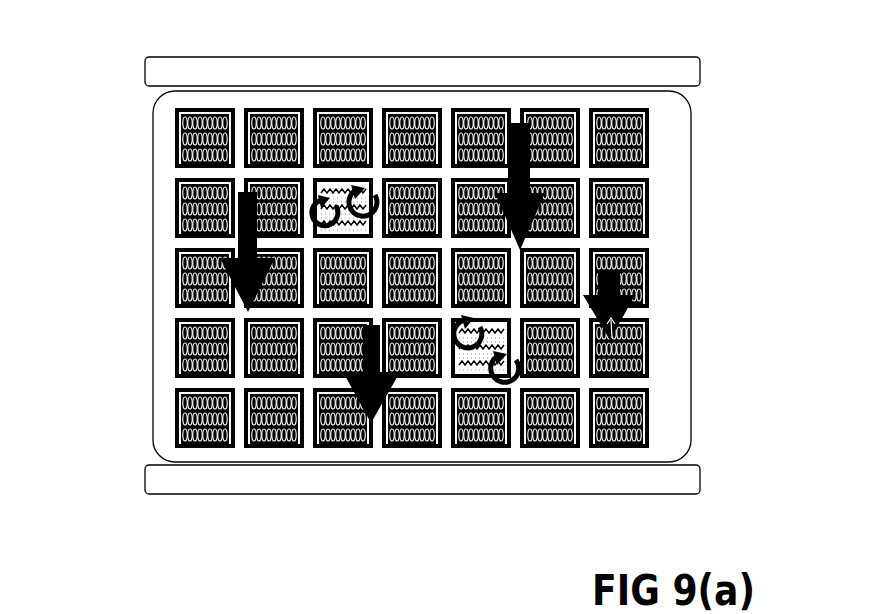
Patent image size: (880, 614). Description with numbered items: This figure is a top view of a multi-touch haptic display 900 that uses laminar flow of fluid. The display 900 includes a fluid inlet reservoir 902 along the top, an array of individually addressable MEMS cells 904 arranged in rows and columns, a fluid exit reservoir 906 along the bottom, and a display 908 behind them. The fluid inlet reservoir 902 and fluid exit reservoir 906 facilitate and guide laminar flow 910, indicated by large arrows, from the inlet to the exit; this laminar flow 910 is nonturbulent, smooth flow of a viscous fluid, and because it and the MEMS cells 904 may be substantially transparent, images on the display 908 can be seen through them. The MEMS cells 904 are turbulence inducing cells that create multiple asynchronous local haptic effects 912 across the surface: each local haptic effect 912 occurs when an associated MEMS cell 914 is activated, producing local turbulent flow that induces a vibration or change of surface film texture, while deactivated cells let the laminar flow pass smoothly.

The multi-touch haptic display 900 is at (86, 145).
The fluid inlet reservoir 902 is at (565, 67).
The MEMS cells 904 is at (640, 147).
The fluid exit reservoir 906 is at (688, 480).
The display 908 is at (682, 325).
The laminar flow 910 is at (248, 313).
The asynchronous local haptic effect 912 is at (469, 373).
The activated MEMS cell 914 is at (343, 238).